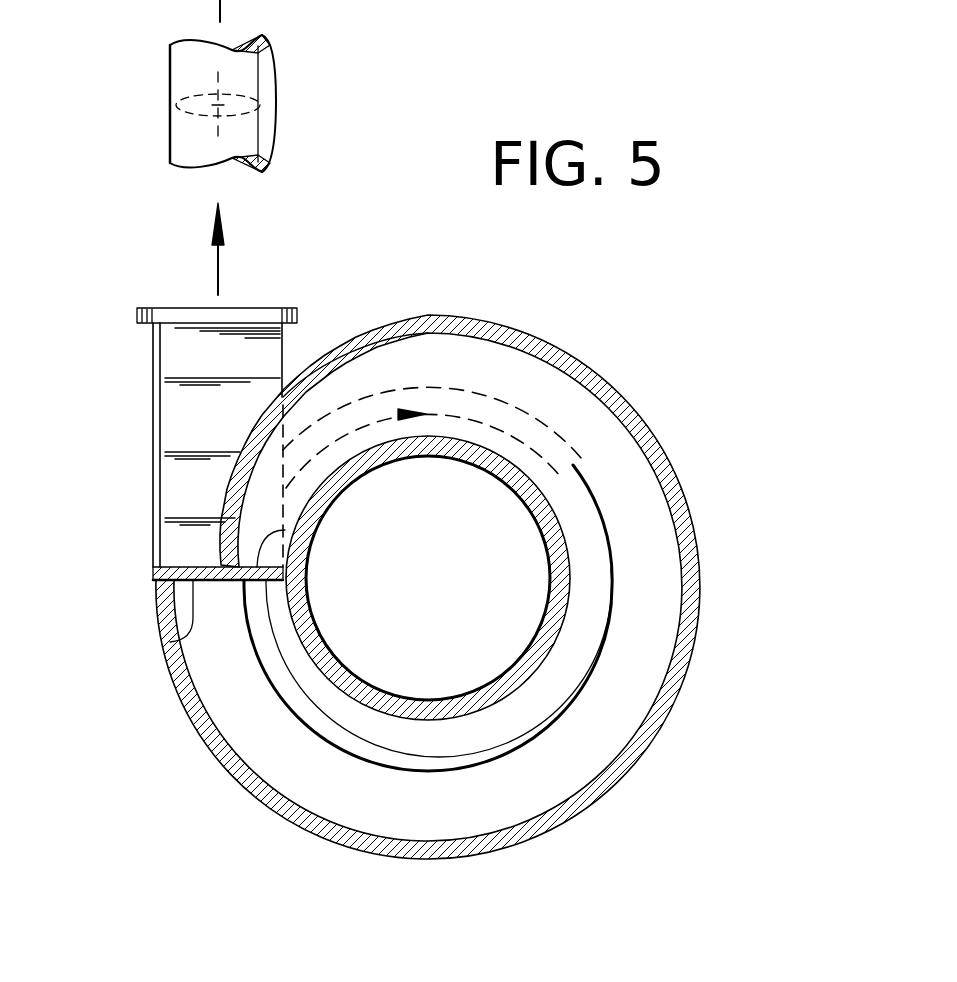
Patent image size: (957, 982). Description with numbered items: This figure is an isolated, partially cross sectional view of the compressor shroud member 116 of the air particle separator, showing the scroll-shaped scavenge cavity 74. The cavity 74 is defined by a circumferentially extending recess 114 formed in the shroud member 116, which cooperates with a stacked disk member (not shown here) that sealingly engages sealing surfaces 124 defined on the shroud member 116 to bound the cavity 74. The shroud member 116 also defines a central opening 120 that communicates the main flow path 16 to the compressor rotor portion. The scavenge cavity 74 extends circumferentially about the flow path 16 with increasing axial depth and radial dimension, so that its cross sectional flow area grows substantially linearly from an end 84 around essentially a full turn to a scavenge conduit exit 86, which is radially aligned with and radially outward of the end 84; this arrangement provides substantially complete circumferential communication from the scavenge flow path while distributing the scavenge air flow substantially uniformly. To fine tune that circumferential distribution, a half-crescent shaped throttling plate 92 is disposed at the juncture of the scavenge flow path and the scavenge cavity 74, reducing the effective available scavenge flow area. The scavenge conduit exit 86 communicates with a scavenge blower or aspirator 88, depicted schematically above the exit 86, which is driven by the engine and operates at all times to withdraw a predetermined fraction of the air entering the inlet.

The flow path 16 is at (428, 578).
The scavenge cavity 74 is at (625, 750).
The end 84 is at (285, 530).
The scavenge conduit exit 86 is at (263, 308).
The scavenge aspirator 88 is at (294, 108).
The throttling plate 92 is at (337, 737).
The recess 114 is at (647, 610).
The compressor shroud member 116 is at (513, 316).
The central opening 120 is at (505, 493).
The sealing surfaces 124 is at (560, 530).